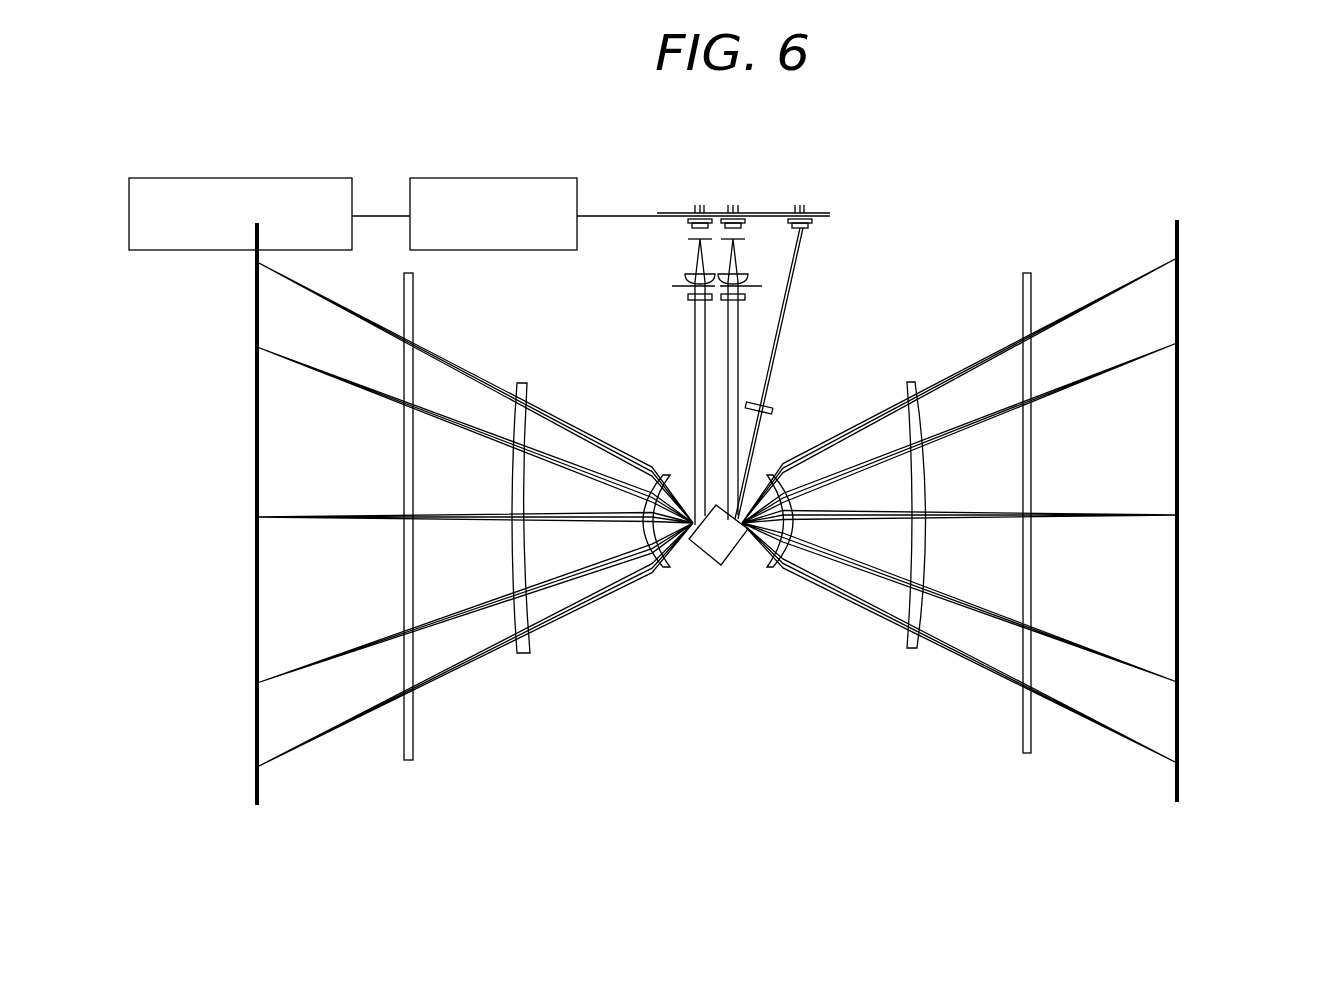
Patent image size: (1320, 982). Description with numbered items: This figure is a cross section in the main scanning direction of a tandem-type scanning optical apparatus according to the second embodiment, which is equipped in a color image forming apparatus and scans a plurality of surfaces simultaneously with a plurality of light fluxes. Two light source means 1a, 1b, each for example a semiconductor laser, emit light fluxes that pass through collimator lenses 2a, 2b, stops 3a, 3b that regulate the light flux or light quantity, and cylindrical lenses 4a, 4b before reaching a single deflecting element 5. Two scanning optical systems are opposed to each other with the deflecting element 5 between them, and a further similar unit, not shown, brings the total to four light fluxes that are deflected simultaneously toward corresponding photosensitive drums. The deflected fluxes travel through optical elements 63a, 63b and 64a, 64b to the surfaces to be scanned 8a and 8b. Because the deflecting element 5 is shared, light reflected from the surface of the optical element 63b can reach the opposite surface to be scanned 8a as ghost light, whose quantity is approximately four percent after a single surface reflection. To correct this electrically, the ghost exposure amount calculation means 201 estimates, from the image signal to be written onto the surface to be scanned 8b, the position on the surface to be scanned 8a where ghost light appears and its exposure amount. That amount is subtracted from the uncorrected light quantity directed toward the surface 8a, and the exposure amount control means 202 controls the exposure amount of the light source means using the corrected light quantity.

The light source means 1a is at (745, 202).
The light source means 1b is at (702, 202).
The collimator lens 2a is at (750, 276).
The collimator lens 2b is at (686, 276).
The stop 3a is at (762, 287).
The stop 3b is at (672, 287).
The cylindrical lens 4a is at (745, 297).
The cylindrical lens 4b is at (688, 297).
The deflecting element 5 is at (718, 568).
The optical element 63a is at (768, 568).
The optical element 63b is at (660, 568).
The second imaging lens 64a is at (913, 650).
The second imaging lens 64b is at (523, 656).
The surface to be scanned 8a is at (1180, 785).
The surface to be scanned 8b is at (257, 797).
The ghost exposure amount calculation means 201 is at (240, 203).
The exposure amount control means 202 is at (493, 203).